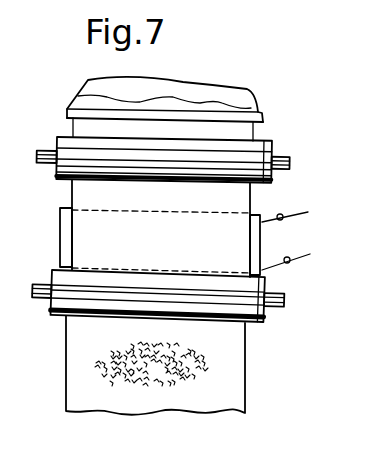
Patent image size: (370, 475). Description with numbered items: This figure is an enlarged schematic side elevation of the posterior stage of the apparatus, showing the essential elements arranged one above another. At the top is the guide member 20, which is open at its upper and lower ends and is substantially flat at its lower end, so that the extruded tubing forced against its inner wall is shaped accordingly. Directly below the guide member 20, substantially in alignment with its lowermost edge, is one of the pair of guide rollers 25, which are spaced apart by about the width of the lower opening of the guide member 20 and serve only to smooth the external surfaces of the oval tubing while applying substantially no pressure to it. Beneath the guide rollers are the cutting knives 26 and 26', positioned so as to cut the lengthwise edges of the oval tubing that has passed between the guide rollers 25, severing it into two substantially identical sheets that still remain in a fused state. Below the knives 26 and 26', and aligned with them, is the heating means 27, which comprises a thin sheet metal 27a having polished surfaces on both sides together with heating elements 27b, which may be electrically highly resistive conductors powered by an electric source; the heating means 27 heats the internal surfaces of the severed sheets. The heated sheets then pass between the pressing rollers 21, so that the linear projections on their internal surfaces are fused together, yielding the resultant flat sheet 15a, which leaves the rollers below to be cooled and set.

The guide member 20 is at (262, 111).
The guide roller 25 is at (258, 144).
The cutting knife 26 is at (41, 179).
The cutting knife 26' is at (293, 185).
The heating means 27 is at (136, 228).
The thin sheet metal 27a is at (66, 248).
The heating elements 27b is at (298, 215).
The pressing roller 21 is at (265, 322).
The flat sheet 15a is at (245, 368).